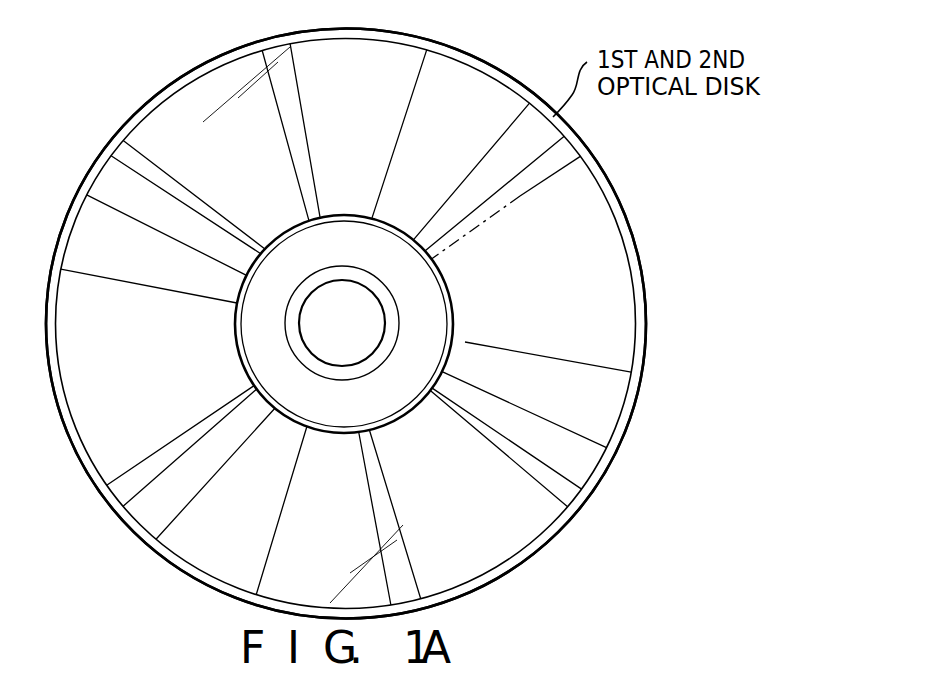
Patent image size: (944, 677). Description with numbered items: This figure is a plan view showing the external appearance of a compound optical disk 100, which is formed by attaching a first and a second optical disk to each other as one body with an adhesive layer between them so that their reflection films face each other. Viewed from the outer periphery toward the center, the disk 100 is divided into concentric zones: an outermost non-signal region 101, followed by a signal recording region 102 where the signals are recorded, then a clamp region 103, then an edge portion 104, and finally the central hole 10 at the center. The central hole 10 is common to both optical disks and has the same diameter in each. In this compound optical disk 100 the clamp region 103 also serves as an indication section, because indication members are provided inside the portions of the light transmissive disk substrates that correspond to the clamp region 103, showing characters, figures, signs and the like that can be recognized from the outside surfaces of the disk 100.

The compound optical disk 100 is at (426, 312).
The non-signal region 101 is at (401, 40).
The signal recording region 102 is at (583, 192).
The clamp region 103 is at (388, 248).
The edge portion 104 is at (388, 306).
The central hole 10 is at (368, 346).